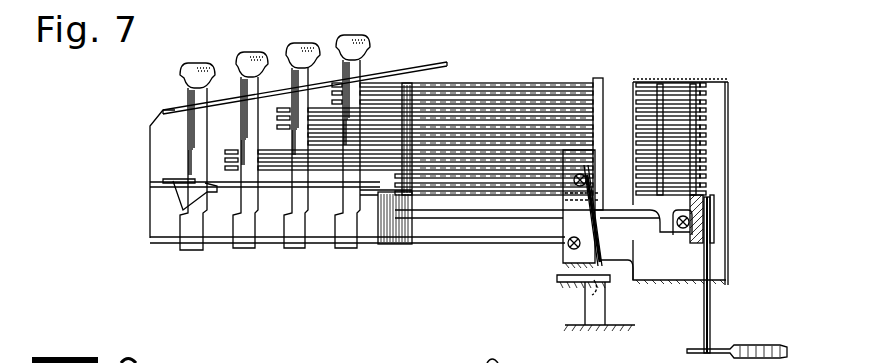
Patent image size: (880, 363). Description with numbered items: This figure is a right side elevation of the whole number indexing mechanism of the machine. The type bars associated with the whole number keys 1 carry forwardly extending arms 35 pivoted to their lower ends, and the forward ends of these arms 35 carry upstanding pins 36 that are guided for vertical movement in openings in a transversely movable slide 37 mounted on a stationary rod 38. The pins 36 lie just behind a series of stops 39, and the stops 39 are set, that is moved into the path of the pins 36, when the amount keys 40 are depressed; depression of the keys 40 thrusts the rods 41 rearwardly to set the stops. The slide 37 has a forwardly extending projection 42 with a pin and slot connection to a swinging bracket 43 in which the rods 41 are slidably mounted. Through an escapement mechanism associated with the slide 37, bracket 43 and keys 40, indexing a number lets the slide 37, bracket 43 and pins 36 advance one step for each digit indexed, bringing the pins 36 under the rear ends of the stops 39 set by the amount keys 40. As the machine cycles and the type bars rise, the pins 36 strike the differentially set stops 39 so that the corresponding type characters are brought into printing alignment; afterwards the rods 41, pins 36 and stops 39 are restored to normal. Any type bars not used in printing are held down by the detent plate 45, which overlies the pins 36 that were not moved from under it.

The whole number keys 1 is at (291, 14).
The amount keys 40 is at (206, 87).
The rods 41 is at (566, 122).
The stops 39 is at (680, 112).
The detent plate 45 is at (712, 193).
The swinging bracket 43 is at (496, 213).
The forwardly extending projection 42 is at (637, 221).
The stationary rod 38 is at (688, 231).
The transversely movable slide 37 is at (703, 247).
The upstanding pins 36 is at (709, 300).
The forwardly extending arms 35 is at (745, 348).